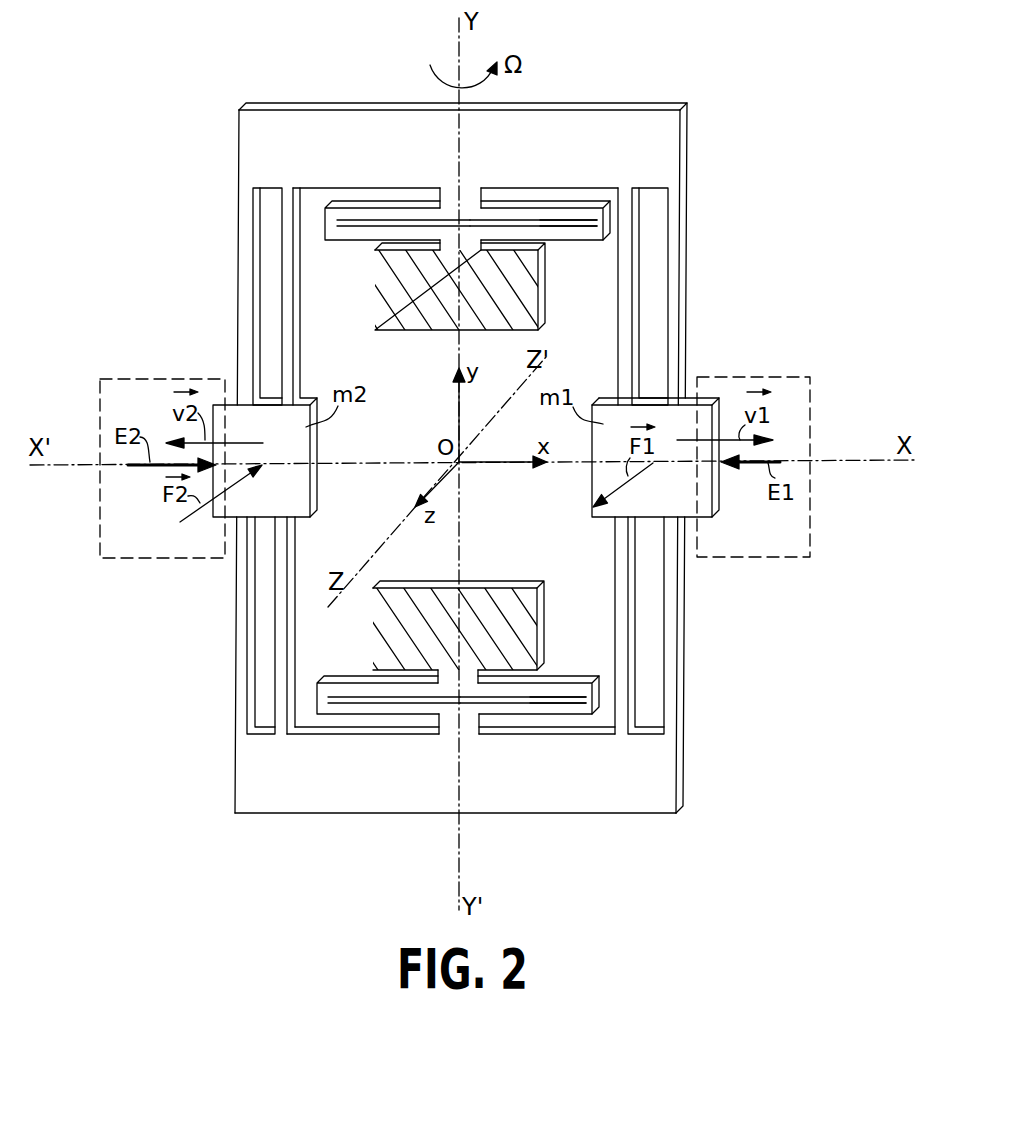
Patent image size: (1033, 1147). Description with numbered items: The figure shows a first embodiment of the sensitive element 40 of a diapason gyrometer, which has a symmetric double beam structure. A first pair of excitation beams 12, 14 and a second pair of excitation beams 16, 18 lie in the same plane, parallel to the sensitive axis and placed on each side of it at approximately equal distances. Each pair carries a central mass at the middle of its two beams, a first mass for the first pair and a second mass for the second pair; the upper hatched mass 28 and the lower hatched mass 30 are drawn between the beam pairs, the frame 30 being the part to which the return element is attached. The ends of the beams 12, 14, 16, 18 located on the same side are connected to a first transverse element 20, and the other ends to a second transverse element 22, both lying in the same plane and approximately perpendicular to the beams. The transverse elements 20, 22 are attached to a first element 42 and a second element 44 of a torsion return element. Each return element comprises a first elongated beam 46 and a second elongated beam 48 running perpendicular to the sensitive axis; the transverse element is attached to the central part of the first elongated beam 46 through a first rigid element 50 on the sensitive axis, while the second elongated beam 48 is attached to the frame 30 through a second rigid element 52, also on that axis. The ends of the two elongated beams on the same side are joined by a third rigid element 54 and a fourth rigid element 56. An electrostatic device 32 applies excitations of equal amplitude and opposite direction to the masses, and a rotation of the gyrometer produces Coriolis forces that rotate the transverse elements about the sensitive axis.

The excitation beam 12 is at (630, 357).
The excitation beam 14 is at (672, 348).
The excitation beam 16 is at (286, 292).
The excitation beam 18 is at (246, 258).
The first transverse element 20 is at (307, 133).
The second transverse element 22 is at (328, 797).
The first detection mass 28 is at (404, 323).
The second frame 30 is at (498, 603).
The electrostatic device 32 is at (150, 378).
The sensitive element 40 is at (623, 78).
The first element of torsion return element 42 is at (571, 257).
The second element of torsion return element 44 is at (566, 651).
The first elongated beam 46 is at (565, 216).
The second elongated beam 48 is at (583, 233).
The first rigid element 50 is at (470, 197).
The second rigid element 52 is at (452, 246).
The third rigid element 54 is at (343, 219).
The fourth rigid element 56 is at (600, 219).